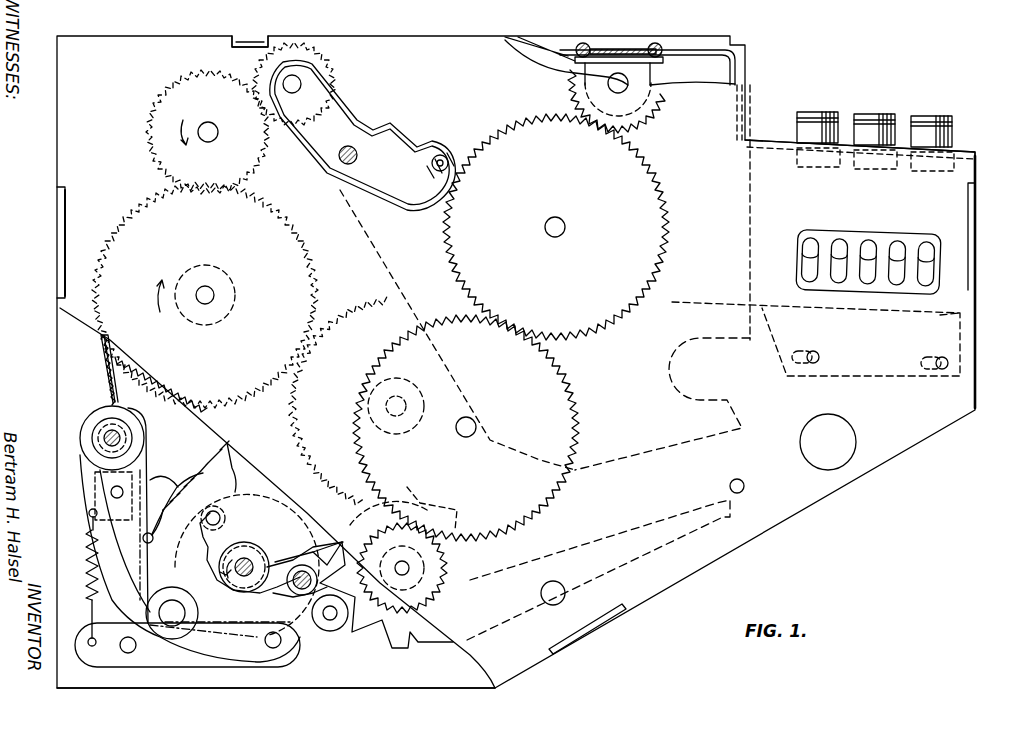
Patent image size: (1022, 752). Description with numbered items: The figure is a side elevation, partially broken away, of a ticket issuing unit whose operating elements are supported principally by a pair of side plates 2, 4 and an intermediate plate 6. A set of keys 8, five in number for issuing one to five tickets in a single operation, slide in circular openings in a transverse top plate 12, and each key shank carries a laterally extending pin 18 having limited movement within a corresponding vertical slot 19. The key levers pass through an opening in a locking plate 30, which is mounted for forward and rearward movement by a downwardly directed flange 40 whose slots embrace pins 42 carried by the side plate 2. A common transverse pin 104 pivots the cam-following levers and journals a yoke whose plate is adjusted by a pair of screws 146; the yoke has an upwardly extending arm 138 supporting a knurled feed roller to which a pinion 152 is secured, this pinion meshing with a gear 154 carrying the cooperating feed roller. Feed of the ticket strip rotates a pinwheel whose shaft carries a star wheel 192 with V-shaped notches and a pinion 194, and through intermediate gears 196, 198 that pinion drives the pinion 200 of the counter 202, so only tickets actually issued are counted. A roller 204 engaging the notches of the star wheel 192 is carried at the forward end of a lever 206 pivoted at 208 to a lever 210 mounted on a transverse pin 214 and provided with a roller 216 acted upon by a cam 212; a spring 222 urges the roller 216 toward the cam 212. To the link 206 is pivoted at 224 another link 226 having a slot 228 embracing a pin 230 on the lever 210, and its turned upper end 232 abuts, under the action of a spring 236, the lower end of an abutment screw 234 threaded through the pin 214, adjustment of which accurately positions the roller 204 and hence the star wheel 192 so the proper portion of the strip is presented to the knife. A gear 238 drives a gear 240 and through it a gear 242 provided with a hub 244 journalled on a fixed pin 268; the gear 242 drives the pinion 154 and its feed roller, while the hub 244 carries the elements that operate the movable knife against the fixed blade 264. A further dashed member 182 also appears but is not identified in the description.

The side plate 2 is at (798, 496).
The side plate 4 is at (438, 680).
The intermediate plate 6 is at (750, 195).
The keys 8 is at (922, 112).
The transverse top plate 12 is at (960, 150).
The pin 18 is at (866, 242).
The vertical slot 19 is at (896, 270).
The locking plate 30 is at (945, 313).
The downwardly directed flange 40 is at (958, 338).
The pins 42 is at (816, 354).
The common transverse pin 104 is at (357, 160).
The upwardly extending arm 138 is at (340, 110).
The screws 146 is at (442, 155).
The pinion 152 is at (320, 70).
The gear 154 is at (150, 122).
The bar 182 is at (648, 522).
The star wheel 192 is at (370, 620).
The pinion 194 is at (455, 585).
The intermediate gear 196 is at (578, 407).
The intermediate gear 198 is at (662, 230).
The pinion of the counter 200 is at (655, 118).
The counter 202 is at (636, 68).
The roller 204 is at (330, 632).
The lever 206 is at (158, 668).
The pivot 208 is at (270, 650).
The lever 210 is at (120, 560).
The cam 212 is at (258, 498).
The transverse pin 214 is at (90, 438).
The roller 216 is at (190, 600).
The spring 222 is at (150, 532).
The pivot 224 is at (124, 652).
The link 226 is at (110, 598).
The slot 228 is at (89, 511).
The pin 230 is at (110, 491).
The turned upper end 232 is at (100, 468).
The abutment screw 234 is at (103, 373).
The spring 236 is at (105, 540).
The gear 238 is at (197, 475).
The gear 240 is at (300, 420).
The gear 242 is at (312, 268).
The hub 244 is at (236, 300).
The fixed blade 264 is at (250, 42).
The fixed pin 268 is at (213, 290).